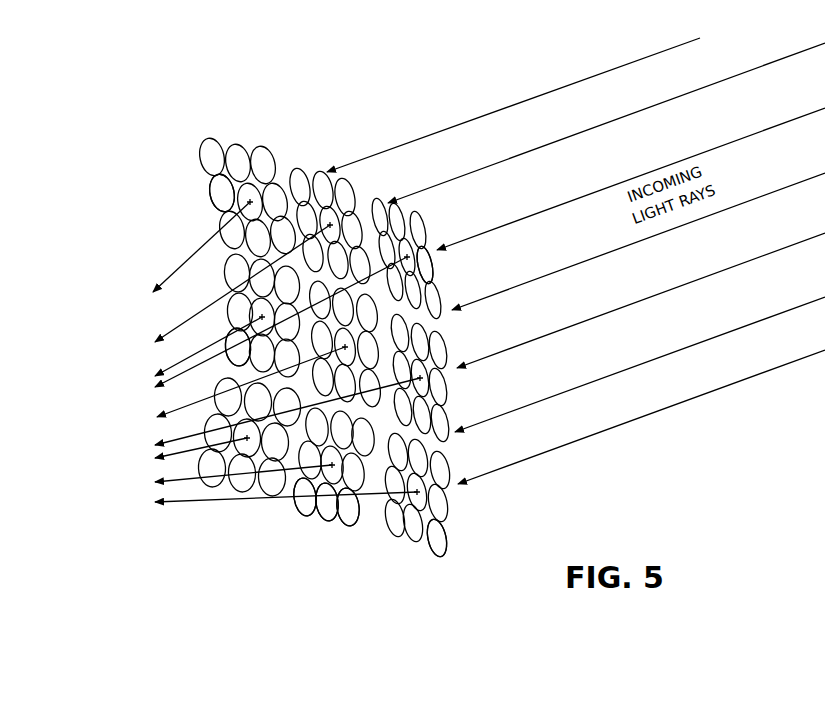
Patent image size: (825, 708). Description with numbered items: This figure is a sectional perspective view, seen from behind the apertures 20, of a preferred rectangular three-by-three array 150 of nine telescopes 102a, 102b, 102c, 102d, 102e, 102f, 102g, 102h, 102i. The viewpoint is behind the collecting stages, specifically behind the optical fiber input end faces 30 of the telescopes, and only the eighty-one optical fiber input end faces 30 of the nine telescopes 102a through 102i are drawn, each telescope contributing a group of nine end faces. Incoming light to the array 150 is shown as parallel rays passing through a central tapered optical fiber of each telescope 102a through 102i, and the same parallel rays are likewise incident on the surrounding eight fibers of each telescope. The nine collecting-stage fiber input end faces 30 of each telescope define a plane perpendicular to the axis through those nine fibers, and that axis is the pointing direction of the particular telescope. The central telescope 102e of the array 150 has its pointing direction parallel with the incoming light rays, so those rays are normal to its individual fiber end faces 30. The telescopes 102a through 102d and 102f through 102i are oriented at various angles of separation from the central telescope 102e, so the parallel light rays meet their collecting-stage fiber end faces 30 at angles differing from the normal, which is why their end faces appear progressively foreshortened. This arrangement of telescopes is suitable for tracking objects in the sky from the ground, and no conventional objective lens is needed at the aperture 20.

The rectangular array 150 is at (306, 113).
The telescope 102a is at (243, 148).
The telescope 102b is at (318, 172).
The telescope 102c is at (424, 222).
The telescope 102d is at (223, 272).
The central telescope 102e is at (383, 313).
The telescope 102f is at (448, 390).
The telescope 102g is at (190, 465).
The telescope 102h is at (293, 507).
The telescope 102i is at (410, 540).
The optical fiber input end face 30 is at (211, 189).
The telescope input or aperture 20 is at (355, 537).